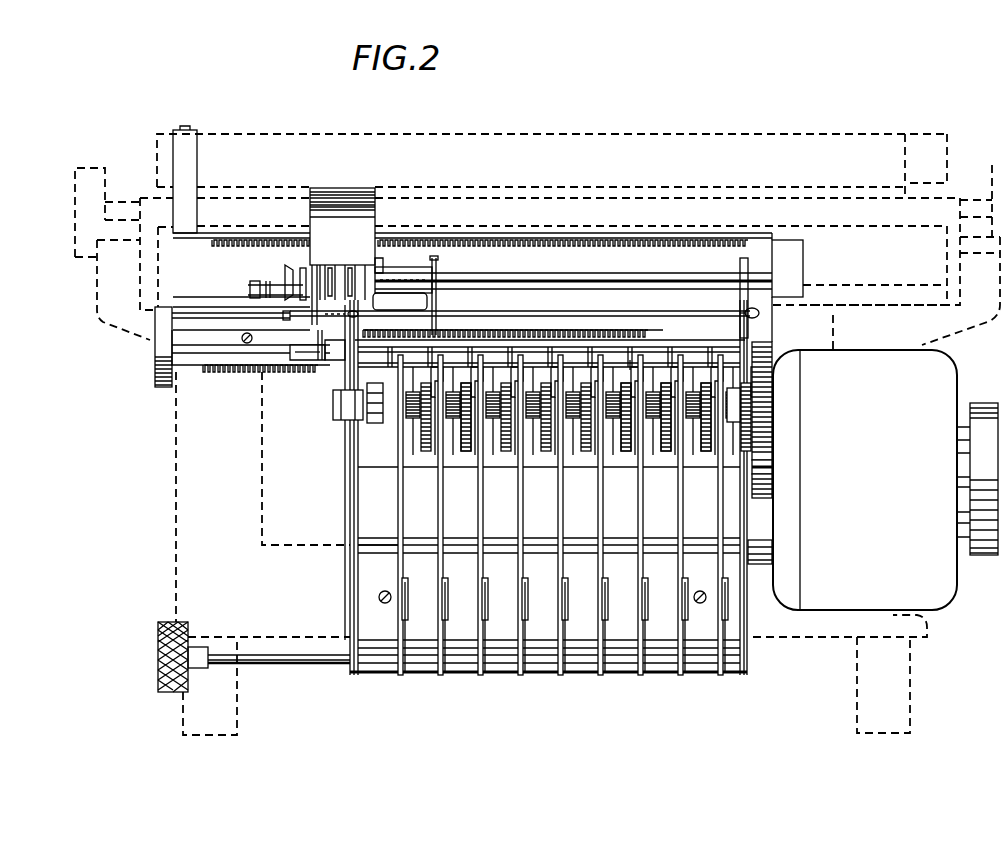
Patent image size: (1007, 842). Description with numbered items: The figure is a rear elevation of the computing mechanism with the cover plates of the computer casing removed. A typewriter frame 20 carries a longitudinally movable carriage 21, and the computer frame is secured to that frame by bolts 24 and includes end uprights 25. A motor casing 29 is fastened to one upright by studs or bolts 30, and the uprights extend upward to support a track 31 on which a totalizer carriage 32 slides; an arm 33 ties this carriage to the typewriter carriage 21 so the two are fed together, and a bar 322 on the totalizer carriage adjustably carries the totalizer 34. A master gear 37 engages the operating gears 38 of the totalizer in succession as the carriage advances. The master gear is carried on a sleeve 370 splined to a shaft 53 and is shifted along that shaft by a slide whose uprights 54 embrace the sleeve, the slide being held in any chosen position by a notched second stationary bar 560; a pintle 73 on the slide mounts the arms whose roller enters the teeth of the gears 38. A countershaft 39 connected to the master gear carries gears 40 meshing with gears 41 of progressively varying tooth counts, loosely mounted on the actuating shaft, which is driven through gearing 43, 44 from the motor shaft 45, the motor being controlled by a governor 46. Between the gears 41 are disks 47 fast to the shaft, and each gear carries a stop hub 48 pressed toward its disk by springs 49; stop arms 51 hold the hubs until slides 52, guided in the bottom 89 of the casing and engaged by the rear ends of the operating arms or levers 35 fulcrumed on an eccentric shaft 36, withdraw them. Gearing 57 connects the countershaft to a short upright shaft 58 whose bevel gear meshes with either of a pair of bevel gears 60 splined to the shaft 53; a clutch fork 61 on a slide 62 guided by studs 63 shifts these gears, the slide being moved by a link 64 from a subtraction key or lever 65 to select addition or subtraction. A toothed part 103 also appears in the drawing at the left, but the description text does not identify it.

The typewriter frame 20 is at (180, 519).
The carriage 21 is at (933, 136).
The bolts 24 is at (375, 597).
The end uprights 25 is at (352, 514).
The motor casing 29 is at (865, 480).
The studs or bolts 30 is at (765, 549).
The track 31 is at (665, 218).
The totalizer carriage 32 is at (768, 322).
The arm 33 is at (185, 179).
The totalizer 34 is at (320, 197).
The operating arms or levers 35 is at (438, 668).
The shaft 36 is at (328, 668).
The master gear 37 is at (378, 268).
The operating gears 38 is at (335, 250).
The countershaft 39 is at (635, 360).
The gears 40 is at (683, 355).
The gears 41 is at (388, 437).
The gearing 43 is at (773, 429).
The gearing 44 is at (773, 470).
The motor shaft 45 is at (773, 481).
The governor 46 is at (988, 403).
The collars or disks 47 is at (606, 452).
The stop hub 48 is at (670, 449).
The springs 49 is at (460, 420).
The stop arms 51 is at (437, 518).
The slides 52 is at (478, 570).
The shaft 53 is at (556, 281).
The arms or uprights 54 is at (376, 258).
The gearing 57 is at (324, 373).
The short upright shaft 58 is at (302, 336).
The bevel gears 60 is at (292, 268).
The clutch fork 61 is at (302, 276).
The slide 62 is at (515, 314).
The studs 63 is at (358, 316).
The link 64 is at (208, 315).
The subtraction key or lever 65 is at (158, 366).
The pintle 73 is at (420, 298).
The bottom of the computer casing 89 is at (388, 547).
The rack 103 is at (205, 370).
The bar 322 is at (778, 268).
The sleeve 370 is at (412, 275).
The second stationary bar 560 is at (497, 335).